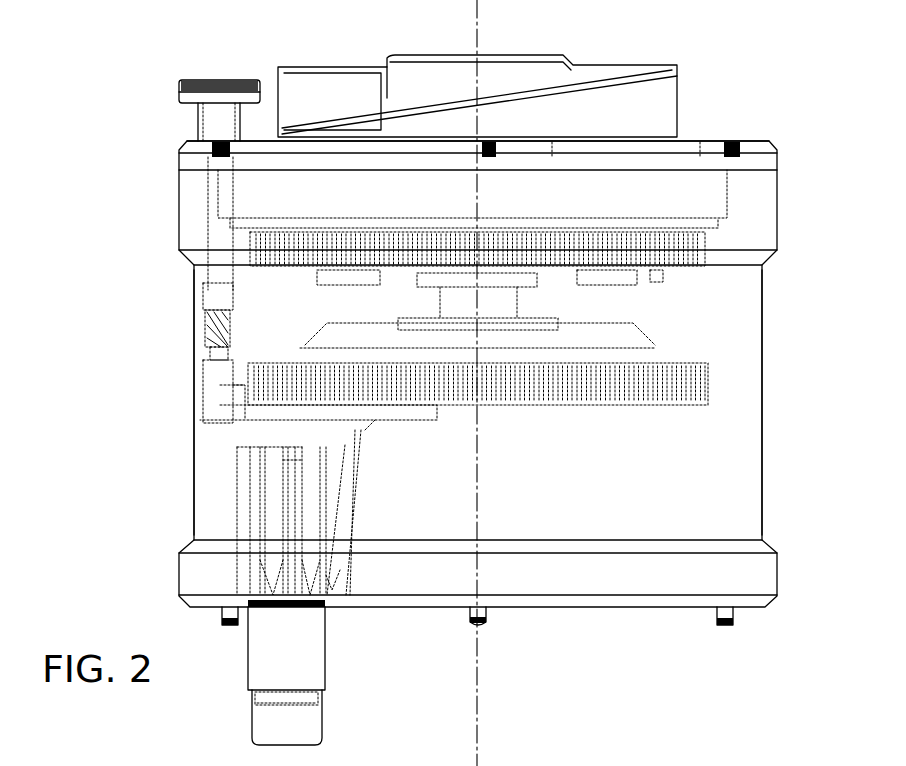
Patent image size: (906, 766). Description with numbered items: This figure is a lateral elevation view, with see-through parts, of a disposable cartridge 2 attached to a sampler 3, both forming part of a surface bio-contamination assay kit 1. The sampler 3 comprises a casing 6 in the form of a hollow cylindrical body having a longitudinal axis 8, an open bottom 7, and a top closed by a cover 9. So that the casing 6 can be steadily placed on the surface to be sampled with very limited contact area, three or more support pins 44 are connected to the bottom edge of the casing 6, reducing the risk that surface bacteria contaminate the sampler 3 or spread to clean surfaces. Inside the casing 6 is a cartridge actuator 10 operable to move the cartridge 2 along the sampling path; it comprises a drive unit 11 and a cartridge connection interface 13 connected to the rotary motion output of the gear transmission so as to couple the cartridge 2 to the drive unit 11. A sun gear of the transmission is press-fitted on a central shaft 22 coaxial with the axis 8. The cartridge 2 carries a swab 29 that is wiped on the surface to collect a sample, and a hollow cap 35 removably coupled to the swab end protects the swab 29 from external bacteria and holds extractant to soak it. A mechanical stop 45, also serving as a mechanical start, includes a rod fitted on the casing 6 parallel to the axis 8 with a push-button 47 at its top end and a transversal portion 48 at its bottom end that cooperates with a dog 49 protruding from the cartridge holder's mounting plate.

The surface bio-contamination assay kit 1 is at (92, 156).
The disposable cartridge 2 is at (328, 645).
The sampler 3 is at (773, 299).
The casing 6 is at (740, 456).
The open bottom 7 is at (672, 607).
The longitudinal axis 8 is at (470, 20).
The cover 9 is at (700, 142).
The cartridge actuator 10 is at (683, 280).
The drive unit 11 is at (730, 202).
The cartridge connection interface 13 is at (225, 457).
The central shaft 22 is at (508, 765).
The swab 29 is at (250, 700).
The hollow cap 35 is at (315, 722).
The support pins 44 is at (733, 620).
The mechanical stop 45 is at (190, 118).
The push-button 47 is at (215, 78).
The transversal portion 48 is at (228, 412).
The dog 49 is at (233, 396).